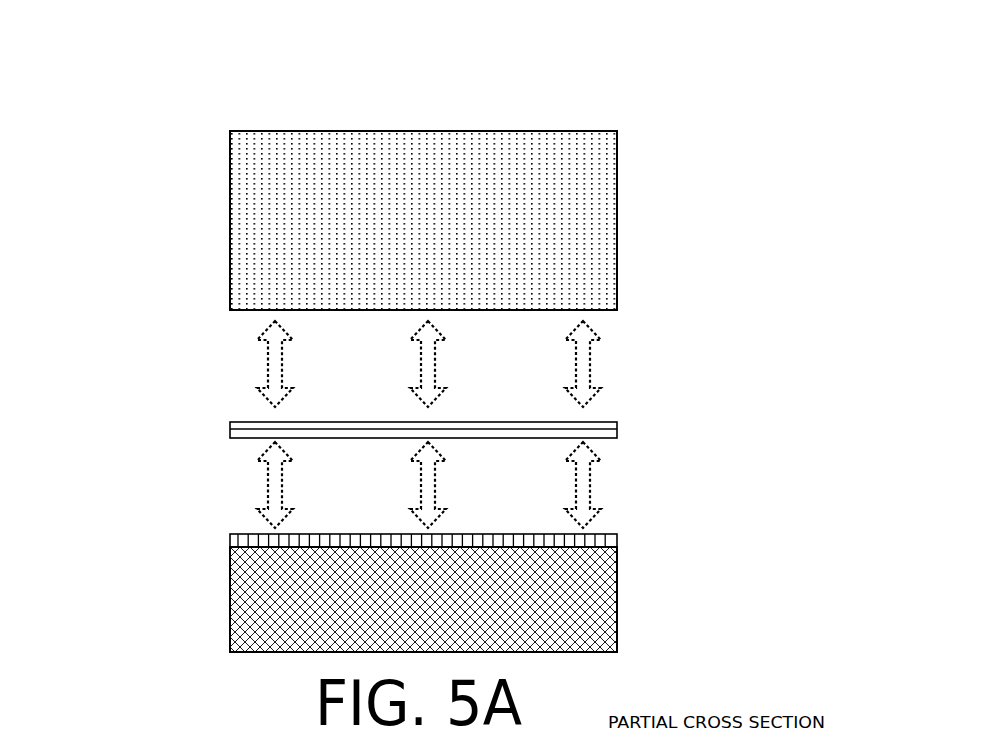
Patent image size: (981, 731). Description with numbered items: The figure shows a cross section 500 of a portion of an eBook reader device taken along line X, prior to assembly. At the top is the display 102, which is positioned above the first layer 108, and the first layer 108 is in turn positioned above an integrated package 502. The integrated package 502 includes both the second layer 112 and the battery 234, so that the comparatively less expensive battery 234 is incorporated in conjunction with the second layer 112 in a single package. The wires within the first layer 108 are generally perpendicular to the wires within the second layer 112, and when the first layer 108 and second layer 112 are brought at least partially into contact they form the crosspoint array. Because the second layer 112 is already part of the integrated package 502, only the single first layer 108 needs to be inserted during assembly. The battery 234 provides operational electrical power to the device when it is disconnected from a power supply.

The cross section 500 is at (541, 99).
The display 102 is at (292, 228).
The first layer 108 is at (255, 429).
The second layer 112 is at (253, 539).
The integrated package 502 is at (222, 652).
The battery 234 is at (567, 585).